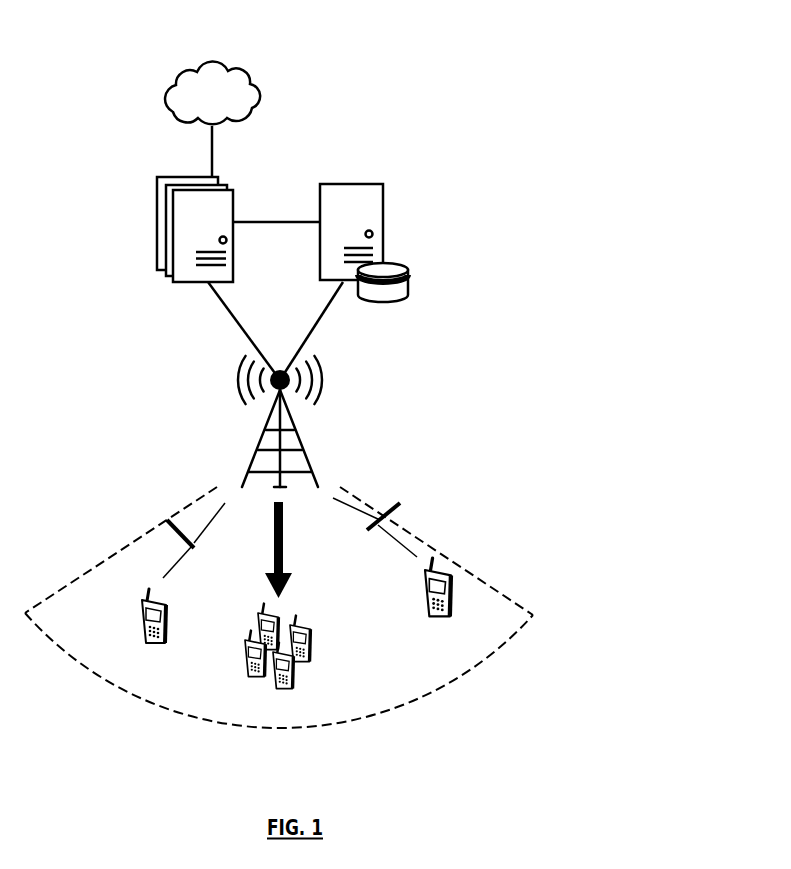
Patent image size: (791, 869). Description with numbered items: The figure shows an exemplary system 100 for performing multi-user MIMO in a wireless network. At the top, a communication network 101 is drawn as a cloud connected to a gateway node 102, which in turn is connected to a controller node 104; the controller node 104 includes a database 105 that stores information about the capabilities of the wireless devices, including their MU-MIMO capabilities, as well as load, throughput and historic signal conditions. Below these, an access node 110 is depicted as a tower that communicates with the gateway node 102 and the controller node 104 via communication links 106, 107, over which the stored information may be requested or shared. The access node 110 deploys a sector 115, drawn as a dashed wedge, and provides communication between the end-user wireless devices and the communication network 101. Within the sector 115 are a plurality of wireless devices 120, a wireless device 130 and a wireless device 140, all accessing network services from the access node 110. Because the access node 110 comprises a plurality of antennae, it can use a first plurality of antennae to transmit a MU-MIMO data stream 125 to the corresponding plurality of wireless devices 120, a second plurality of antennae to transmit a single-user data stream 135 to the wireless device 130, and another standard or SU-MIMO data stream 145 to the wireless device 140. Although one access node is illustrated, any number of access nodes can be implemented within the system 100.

The system 100 is at (396, 40).
The communication network 101 is at (195, 104).
The gateway node 102 is at (175, 177).
The controller node 104 is at (383, 184).
The database 105 is at (407, 265).
The communication link 106 is at (320, 316).
The communication link 107 is at (227, 311).
The access node 110 is at (255, 457).
The sector 115 is at (488, 655).
The wireless devices 120 is at (324, 678).
The MU-MIMO data stream 125 is at (293, 588).
The wireless device 130 is at (141, 612).
The single-user data stream 135 is at (167, 520).
The wireless device 140 is at (452, 571).
The standard or SU-MIMO data stream 145 is at (401, 506).